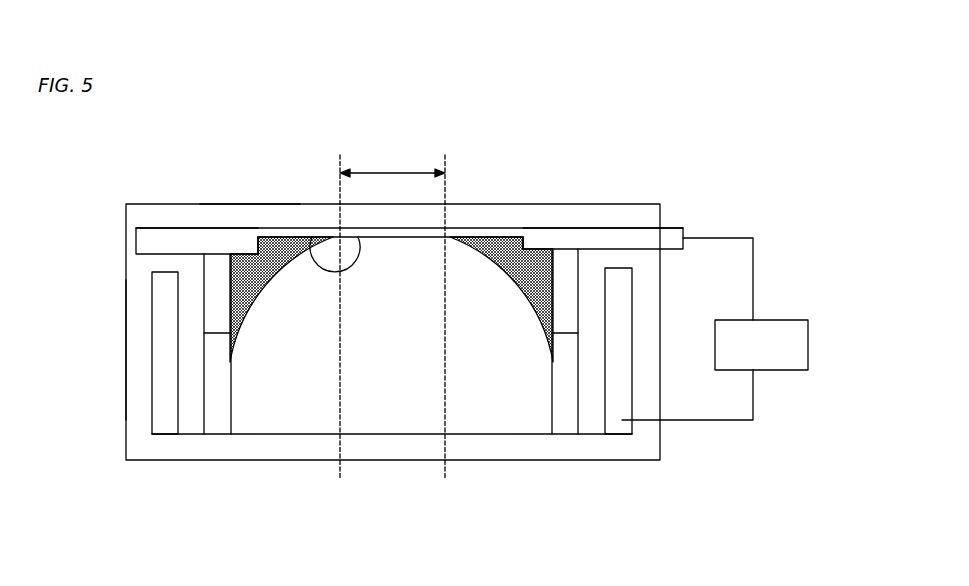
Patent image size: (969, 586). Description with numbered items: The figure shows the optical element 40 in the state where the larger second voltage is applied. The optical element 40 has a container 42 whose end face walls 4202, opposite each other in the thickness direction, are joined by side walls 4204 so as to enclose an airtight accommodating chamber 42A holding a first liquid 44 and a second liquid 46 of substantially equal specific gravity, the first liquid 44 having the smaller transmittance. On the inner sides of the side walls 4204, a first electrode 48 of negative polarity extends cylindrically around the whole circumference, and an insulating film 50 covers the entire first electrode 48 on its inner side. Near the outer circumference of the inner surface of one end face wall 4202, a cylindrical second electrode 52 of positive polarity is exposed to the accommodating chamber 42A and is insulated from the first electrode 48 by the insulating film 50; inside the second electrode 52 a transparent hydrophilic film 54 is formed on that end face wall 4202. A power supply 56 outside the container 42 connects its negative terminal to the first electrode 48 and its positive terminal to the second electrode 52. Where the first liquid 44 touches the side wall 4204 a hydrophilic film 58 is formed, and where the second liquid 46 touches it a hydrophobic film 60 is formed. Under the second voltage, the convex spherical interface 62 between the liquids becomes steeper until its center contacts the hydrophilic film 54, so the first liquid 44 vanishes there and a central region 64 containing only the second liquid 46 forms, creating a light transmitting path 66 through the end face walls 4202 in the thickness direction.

The optical element 40 is at (115, 455).
The container 42 is at (637, 205).
The end face wall 4202 is at (243, 203).
The side wall 4204 is at (126, 381).
The accommodating chamber 42A is at (303, 420).
The first liquid 44 is at (269, 241).
The second liquid 46 is at (397, 407).
The first electrode 48 is at (162, 287).
The insulating film 50 is at (590, 422).
The second electrode 52 is at (167, 228).
The hydrophilic film 54 is at (313, 240).
The power supply 56 is at (795, 320).
The hydrophilic film 58 is at (244, 277).
The hydrophobic film 60 is at (233, 393).
The interface 62 is at (503, 238).
The region 64 is at (392, 304).
The transmitting path 66 is at (447, 412).